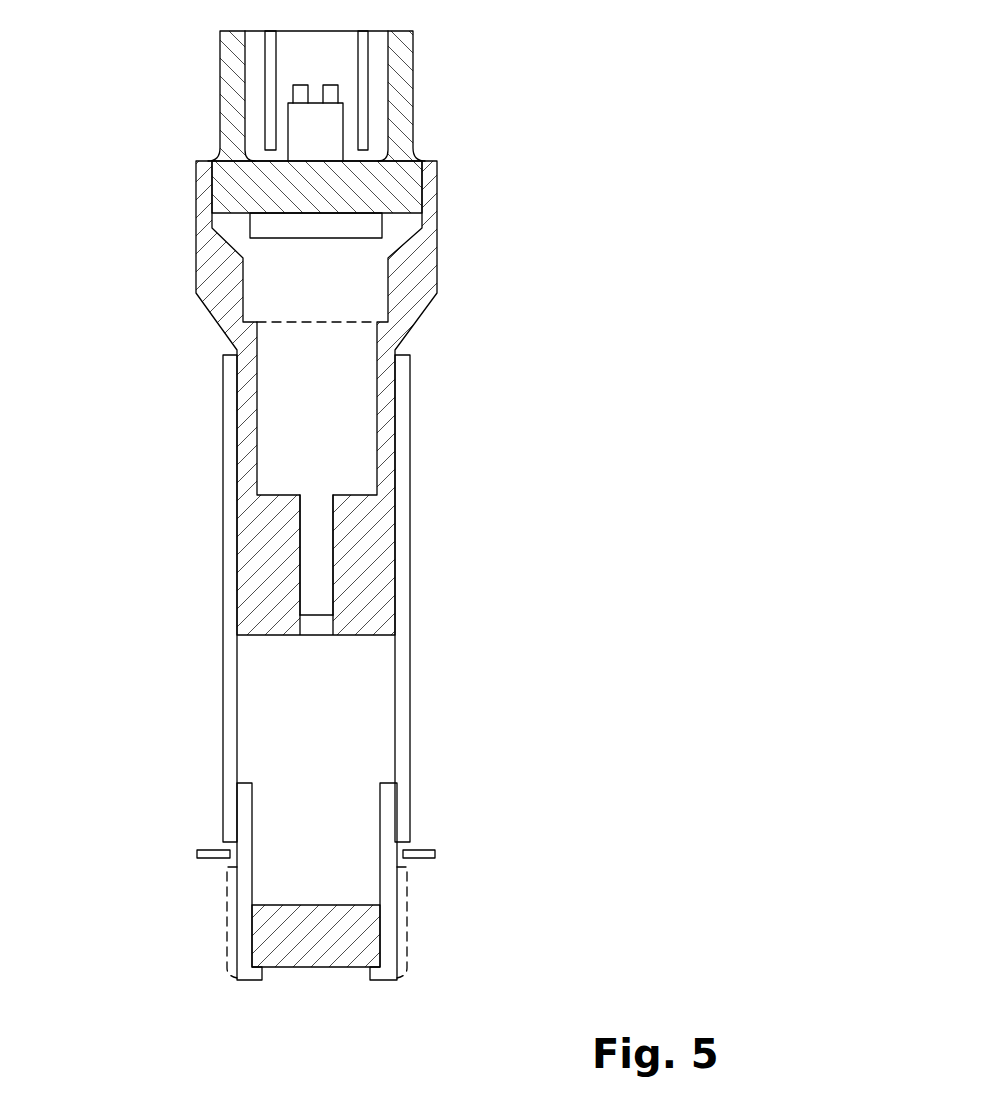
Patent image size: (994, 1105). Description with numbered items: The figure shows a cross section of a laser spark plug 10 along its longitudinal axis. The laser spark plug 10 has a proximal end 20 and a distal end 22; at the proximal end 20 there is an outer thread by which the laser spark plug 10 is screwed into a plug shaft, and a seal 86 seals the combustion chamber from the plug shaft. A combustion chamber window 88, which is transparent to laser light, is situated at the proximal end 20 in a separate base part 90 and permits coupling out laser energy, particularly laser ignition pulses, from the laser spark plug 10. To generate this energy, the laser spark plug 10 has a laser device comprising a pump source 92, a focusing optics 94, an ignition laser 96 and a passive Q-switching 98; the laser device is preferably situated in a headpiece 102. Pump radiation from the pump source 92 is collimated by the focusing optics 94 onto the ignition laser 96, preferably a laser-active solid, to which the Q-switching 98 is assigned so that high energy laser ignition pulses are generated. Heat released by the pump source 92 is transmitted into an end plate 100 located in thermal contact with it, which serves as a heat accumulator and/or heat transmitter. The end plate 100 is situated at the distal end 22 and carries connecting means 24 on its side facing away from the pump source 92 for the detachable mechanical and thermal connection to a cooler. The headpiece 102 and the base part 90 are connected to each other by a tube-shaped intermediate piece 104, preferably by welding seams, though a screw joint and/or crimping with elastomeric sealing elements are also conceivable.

The laser spark plug 10 is at (341, 532).
The proximal end 20 is at (338, 908).
The distal end 22 is at (393, 96).
The connecting means 24 is at (194, 72).
The seal 86 is at (197, 855).
The combustion chamber window 88 is at (322, 957).
The base part 90 is at (243, 927).
The pump source 92 is at (370, 228).
The focusing optics 94 is at (355, 317).
The ignition laser 96 is at (320, 545).
The passive Q-switching 98 is at (320, 623).
The end plate 100 is at (408, 186).
The headpiece 102 is at (213, 275).
The tube-shaped intermediate piece 104 is at (229, 462).